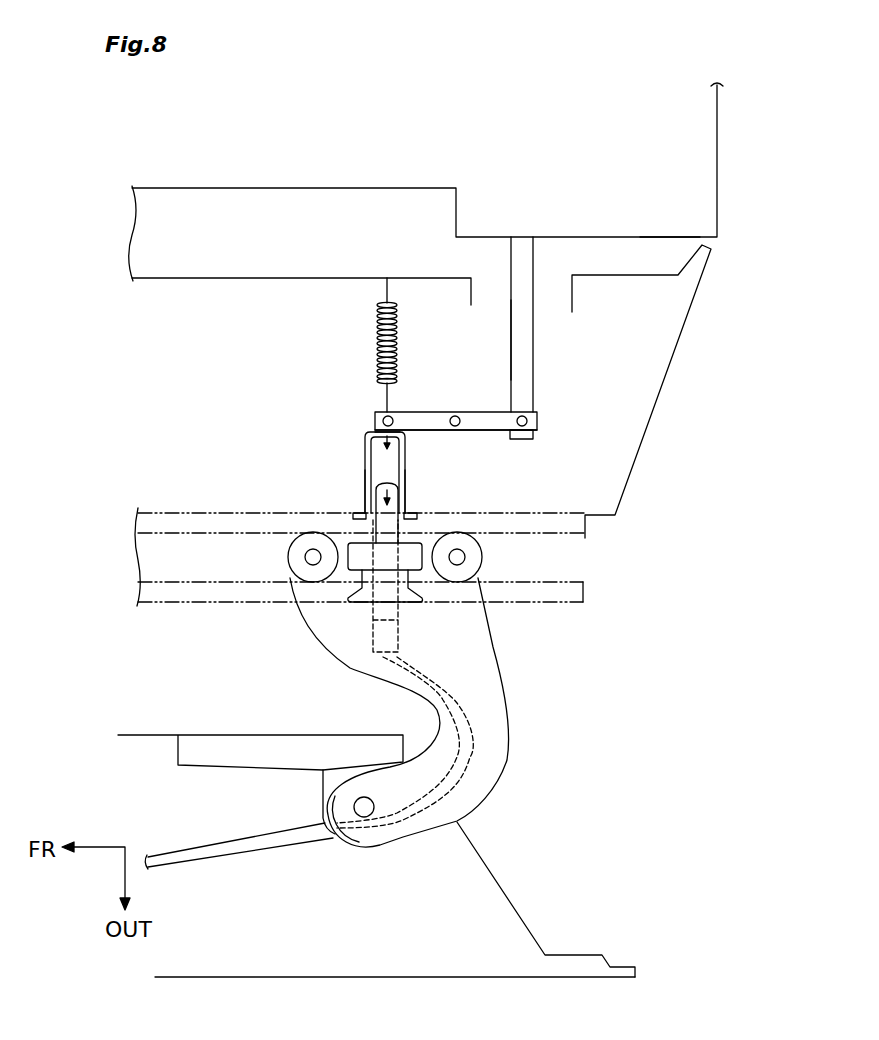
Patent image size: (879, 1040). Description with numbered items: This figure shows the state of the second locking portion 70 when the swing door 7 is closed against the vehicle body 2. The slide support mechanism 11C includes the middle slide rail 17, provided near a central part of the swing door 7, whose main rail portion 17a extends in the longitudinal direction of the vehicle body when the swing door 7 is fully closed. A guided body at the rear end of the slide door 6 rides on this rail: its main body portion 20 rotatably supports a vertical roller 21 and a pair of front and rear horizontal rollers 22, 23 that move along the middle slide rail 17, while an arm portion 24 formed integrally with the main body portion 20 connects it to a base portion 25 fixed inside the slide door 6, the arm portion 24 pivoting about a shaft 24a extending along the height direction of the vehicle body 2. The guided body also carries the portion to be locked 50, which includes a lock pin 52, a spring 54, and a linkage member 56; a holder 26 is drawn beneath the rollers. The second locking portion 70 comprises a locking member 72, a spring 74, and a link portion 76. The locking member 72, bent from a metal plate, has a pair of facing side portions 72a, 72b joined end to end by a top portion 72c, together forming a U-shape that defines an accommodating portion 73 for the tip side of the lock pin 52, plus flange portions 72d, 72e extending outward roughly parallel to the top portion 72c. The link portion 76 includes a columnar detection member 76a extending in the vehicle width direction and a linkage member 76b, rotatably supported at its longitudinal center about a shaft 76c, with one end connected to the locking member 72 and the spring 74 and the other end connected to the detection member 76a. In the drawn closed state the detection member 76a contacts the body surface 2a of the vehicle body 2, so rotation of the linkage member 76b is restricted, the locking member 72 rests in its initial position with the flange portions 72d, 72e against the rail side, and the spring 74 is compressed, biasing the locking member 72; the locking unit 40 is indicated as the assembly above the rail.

The vehicle body 2 is at (702, 194).
The body surface 2a is at (664, 238).
The slide door 6 is at (256, 977).
The swing door 7 is at (635, 392).
The slide support mechanism 11C is at (378, 528).
The main rail portion 17a is at (378, 532).
The middle slide rail 17 is at (556, 512).
The main body portion 20 is at (457, 777).
The vertical roller 21 is at (368, 553).
The horizontal roller 22 is at (308, 545).
The horizontal roller 23 is at (467, 540).
The arm portion 24 is at (490, 758).
The shaft 24a is at (364, 817).
The base portion 25 is at (222, 748).
The holder 26 is at (345, 590).
The lock unit 40 is at (354, 486).
The portion to be locked 50 is at (372, 611).
The lock pin 52 is at (420, 593).
The spring 54 is at (400, 632).
The linkage member 56 is at (244, 862).
The second locking portion 70 is at (490, 434).
The locking member 72 is at (374, 434).
The side portion 72a is at (366, 495).
The side portion 72b is at (408, 468).
The top portion 72c is at (393, 430).
The flange portion 72d is at (358, 512).
The flange portion 72e is at (412, 512).
The accommodating portion 73 is at (387, 443).
The spring 74 is at (382, 330).
The link portion 76 is at (505, 338).
The detection member 76a is at (525, 345).
The linkage member 76b is at (484, 418).
The shaft 76c is at (454, 410).